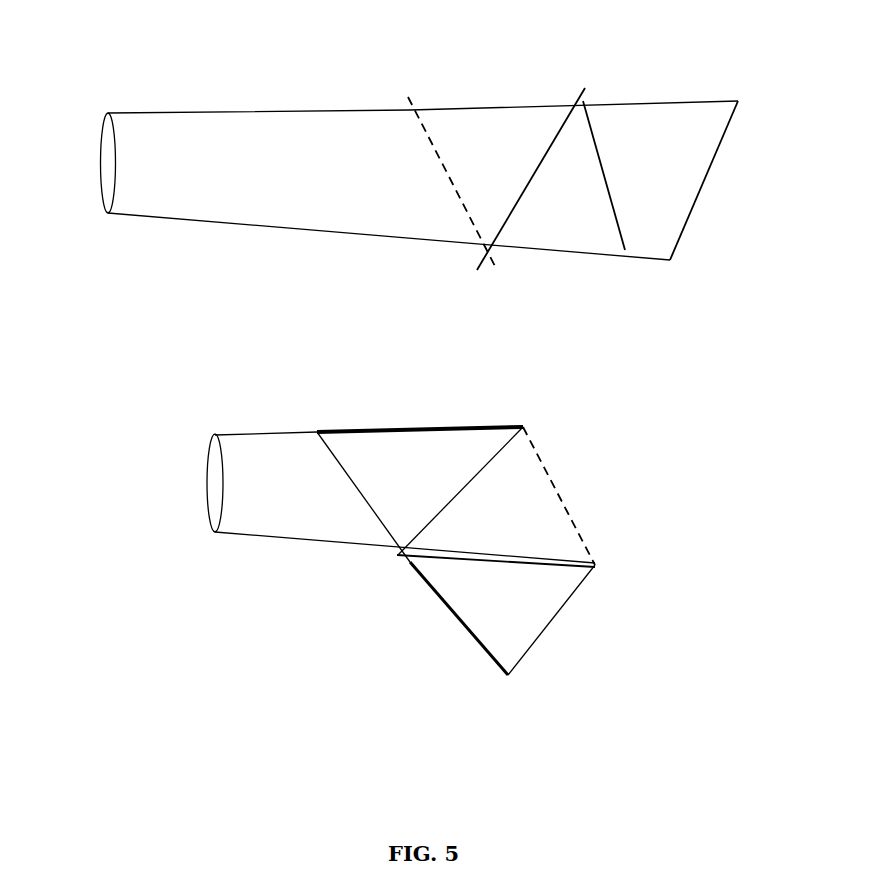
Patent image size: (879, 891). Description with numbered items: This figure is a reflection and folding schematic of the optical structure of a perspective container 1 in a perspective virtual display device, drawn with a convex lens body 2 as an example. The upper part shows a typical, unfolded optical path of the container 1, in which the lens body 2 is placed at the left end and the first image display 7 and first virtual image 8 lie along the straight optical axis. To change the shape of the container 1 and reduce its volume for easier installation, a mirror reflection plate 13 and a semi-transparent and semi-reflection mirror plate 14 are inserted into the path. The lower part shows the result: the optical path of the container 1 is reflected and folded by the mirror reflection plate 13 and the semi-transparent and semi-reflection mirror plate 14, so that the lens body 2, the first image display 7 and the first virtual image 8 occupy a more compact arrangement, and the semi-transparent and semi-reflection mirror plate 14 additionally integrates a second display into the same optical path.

The container 1 is at (340, 243).
The lens body 2 is at (110, 113).
The first image display 7 is at (713, 170).
The first virtual image 8 is at (598, 153).
The mirror reflection plate 13 is at (433, 145).
The semi-transparent and semi-reflection mirror plate 14 is at (543, 149).